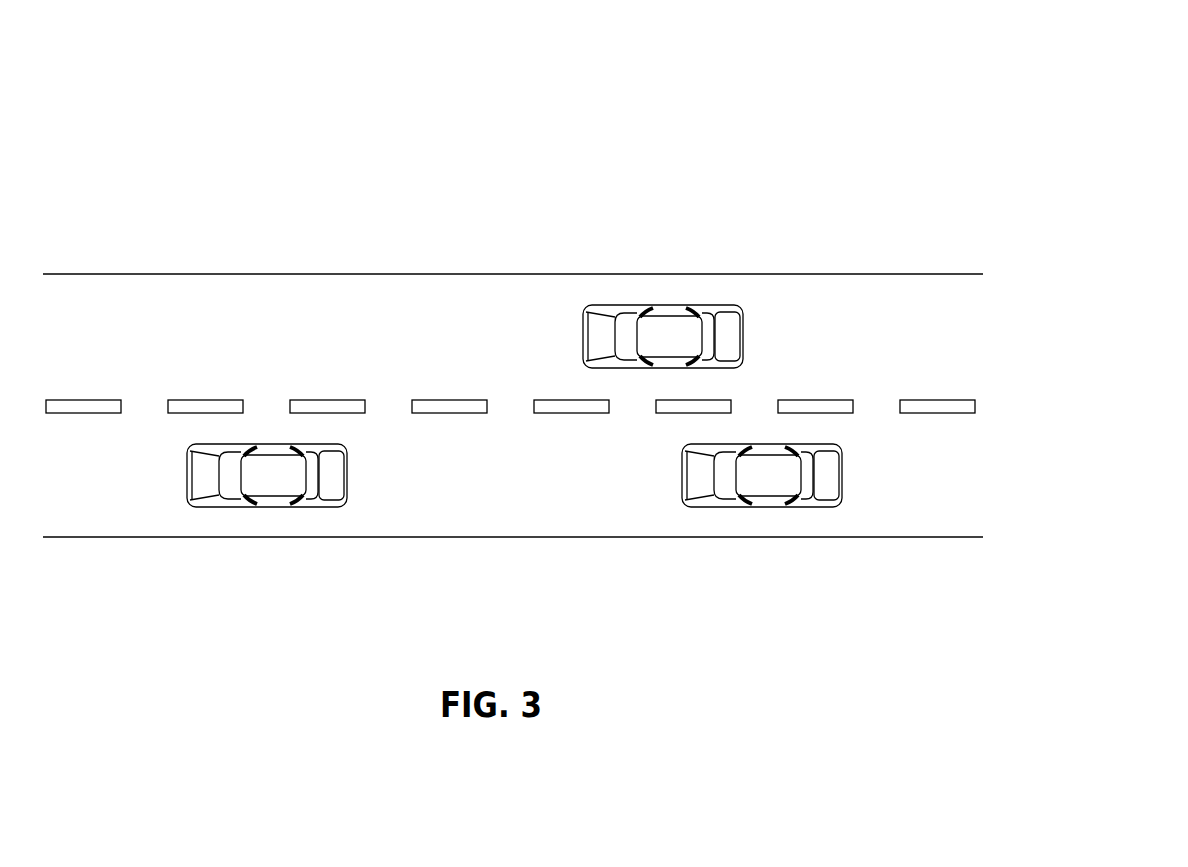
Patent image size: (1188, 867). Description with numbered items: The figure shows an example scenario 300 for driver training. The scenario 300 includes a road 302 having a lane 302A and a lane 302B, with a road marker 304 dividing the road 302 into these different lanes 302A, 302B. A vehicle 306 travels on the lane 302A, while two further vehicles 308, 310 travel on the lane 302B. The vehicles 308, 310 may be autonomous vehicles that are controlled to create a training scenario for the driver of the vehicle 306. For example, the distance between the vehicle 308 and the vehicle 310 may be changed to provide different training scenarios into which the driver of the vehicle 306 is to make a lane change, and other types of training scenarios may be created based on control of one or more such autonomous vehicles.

The scenario 300 is at (770, 62).
The road 302 is at (418, 274).
The lane 302A is at (113, 317).
The lane 302B is at (113, 519).
The road marker 304 is at (977, 406).
The vehicle 306 is at (668, 308).
The vehicle 308 is at (276, 446).
The vehicle 310 is at (822, 443).